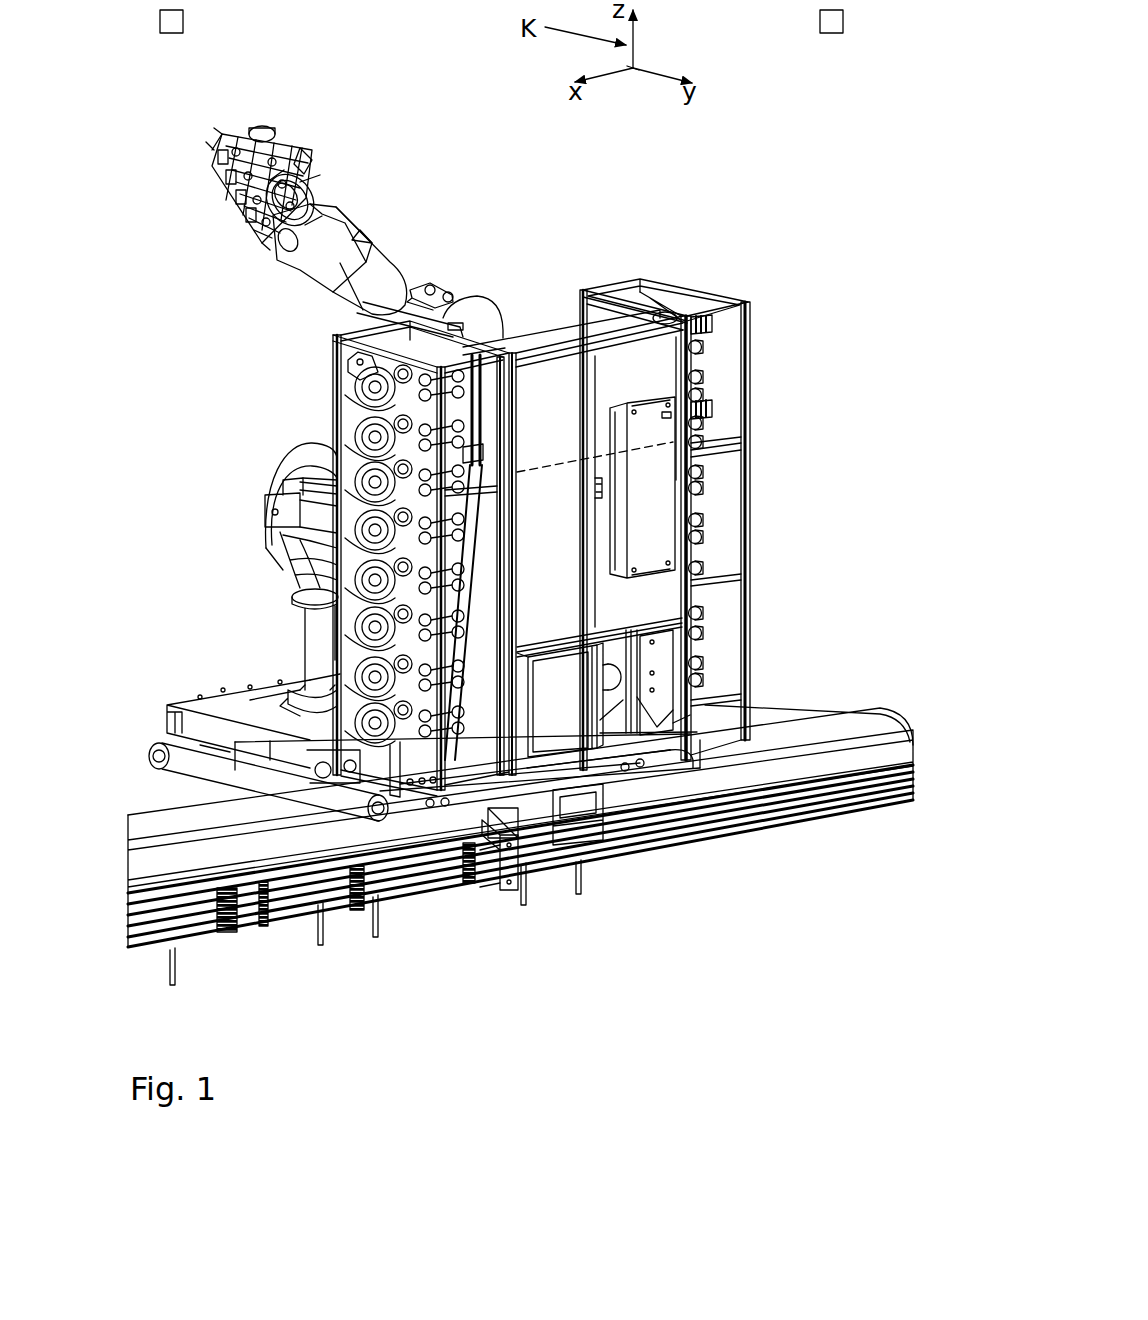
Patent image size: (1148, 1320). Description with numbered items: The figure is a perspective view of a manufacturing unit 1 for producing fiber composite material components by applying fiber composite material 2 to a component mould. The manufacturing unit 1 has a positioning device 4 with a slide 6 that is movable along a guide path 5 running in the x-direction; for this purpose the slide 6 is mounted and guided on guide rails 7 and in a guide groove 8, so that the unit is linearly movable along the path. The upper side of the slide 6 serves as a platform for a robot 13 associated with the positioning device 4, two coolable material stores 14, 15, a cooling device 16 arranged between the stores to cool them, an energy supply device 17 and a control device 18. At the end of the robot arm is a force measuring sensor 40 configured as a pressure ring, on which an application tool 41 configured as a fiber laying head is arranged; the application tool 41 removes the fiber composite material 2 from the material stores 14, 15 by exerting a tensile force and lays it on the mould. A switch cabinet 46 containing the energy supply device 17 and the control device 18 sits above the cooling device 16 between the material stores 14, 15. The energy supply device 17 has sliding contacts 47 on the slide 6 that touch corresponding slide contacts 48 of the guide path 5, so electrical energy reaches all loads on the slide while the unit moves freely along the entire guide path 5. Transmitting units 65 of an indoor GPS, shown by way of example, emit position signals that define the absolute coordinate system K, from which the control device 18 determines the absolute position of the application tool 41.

The manufacturing unit 1 is at (523, 182).
The fiber composite material 2 is at (463, 410).
The positioning device 4 is at (285, 611).
The guide path 5 is at (130, 810).
The slide 6 is at (175, 710).
The guide rails 7 is at (198, 797).
The guide groove 8 is at (783, 722).
The robot 13 is at (371, 229).
The material store 14 is at (330, 383).
The material store 15 is at (627, 275).
The cooling device 16 is at (575, 740).
The energy supply device 17 is at (648, 599).
The control device 18 is at (568, 372).
The force measuring sensor 40 is at (318, 173).
The application tool 41 is at (283, 129).
The switch cabinet 46 is at (527, 350).
The sliding contacts 47 is at (490, 867).
The slide contacts 48 is at (338, 890).
The transmitting units 65 is at (183, 22).